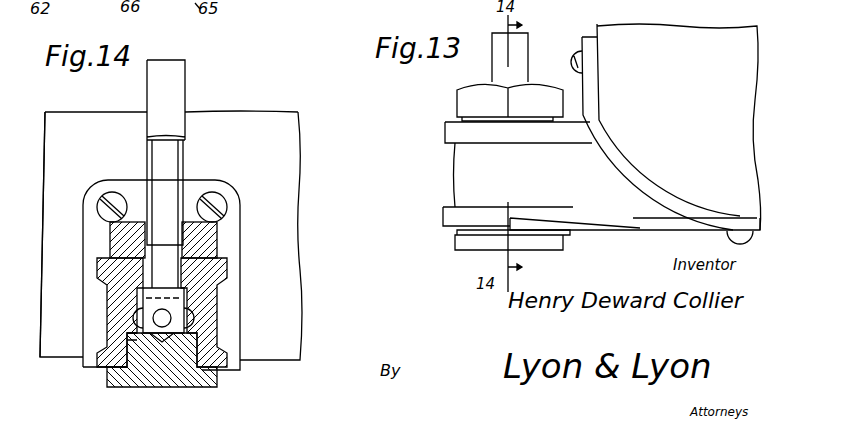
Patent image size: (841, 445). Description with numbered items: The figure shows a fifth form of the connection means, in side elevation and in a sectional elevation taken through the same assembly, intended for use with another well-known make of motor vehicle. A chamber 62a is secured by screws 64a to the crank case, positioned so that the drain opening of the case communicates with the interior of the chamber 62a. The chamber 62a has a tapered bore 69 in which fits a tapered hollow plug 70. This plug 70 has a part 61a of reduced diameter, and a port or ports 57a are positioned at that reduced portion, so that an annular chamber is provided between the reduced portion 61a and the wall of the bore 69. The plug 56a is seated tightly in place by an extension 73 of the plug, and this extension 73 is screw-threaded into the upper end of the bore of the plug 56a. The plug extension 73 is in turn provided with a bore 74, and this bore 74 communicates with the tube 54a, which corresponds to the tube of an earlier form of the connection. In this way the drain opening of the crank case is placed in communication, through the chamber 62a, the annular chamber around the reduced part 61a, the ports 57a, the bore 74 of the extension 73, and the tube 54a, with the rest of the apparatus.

In FIG. 14, the tube 54a is at (172, 157).
In FIG. 14, the screws 64a is at (112, 193).
In FIG. 13, the screws 64a is at (518, 50).
In FIG. 14, the plug extension 73 is at (217, 237).
In FIG. 13, the plug extension 73 is at (465, 98).
In FIG. 14, the tapered hollow plug 70 is at (112, 277).
In FIG. 14, the bore 74 is at (233, 268).
In FIG. 14, the part of reduced diameter 61a is at (127, 310).
In FIG. 14, the tapered bore 69 is at (193, 320).
In FIG. 14, the ports 57a is at (127, 328).
In FIG. 14, the chamber 62a is at (217, 300).
In FIG. 13, the chamber 62a is at (463, 177).
In FIG. 14, the plug 56a is at (170, 383).
In FIG. 13, the plug 56a is at (457, 243).